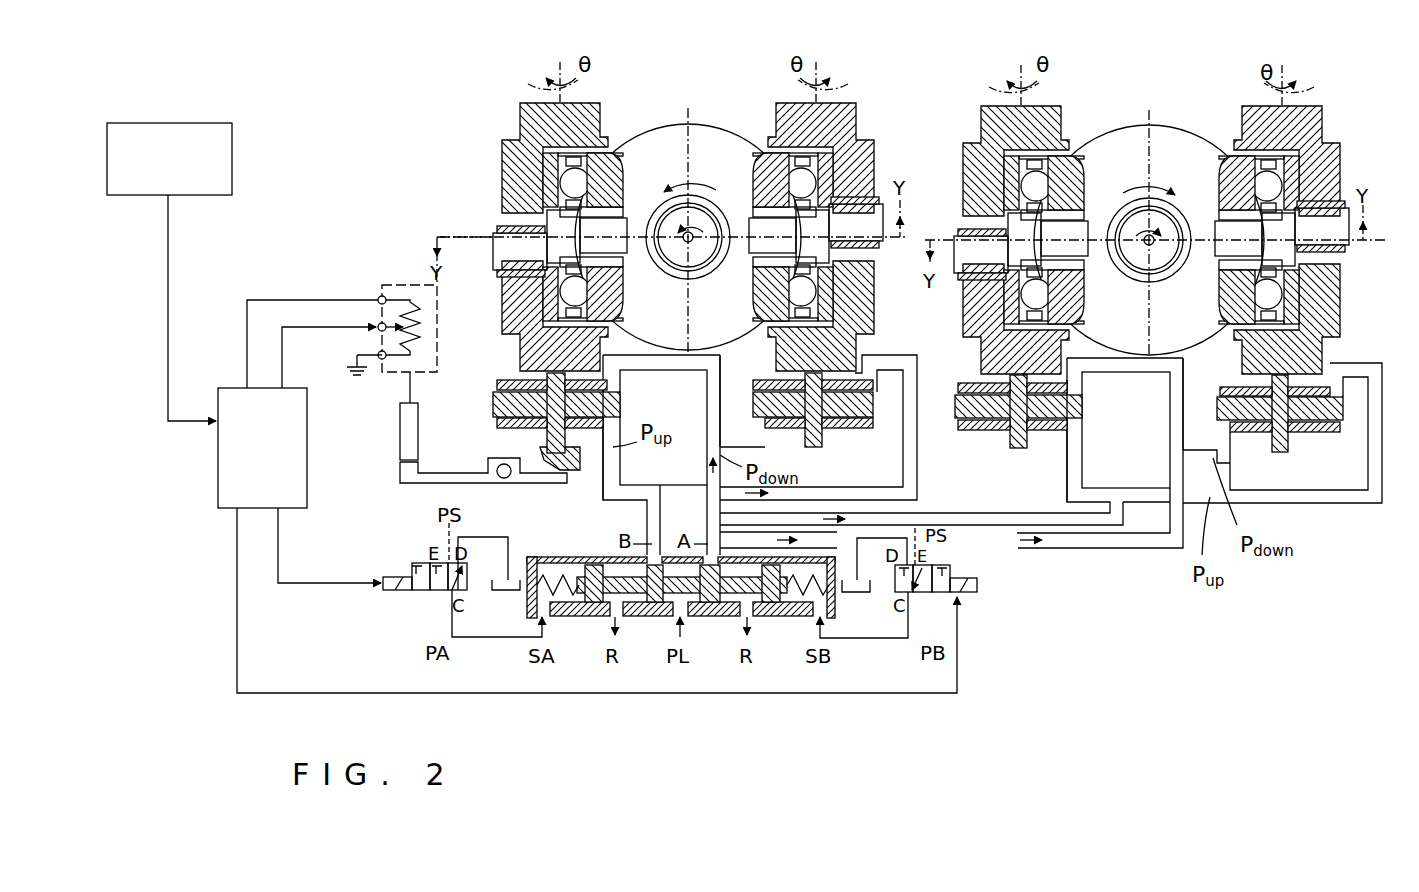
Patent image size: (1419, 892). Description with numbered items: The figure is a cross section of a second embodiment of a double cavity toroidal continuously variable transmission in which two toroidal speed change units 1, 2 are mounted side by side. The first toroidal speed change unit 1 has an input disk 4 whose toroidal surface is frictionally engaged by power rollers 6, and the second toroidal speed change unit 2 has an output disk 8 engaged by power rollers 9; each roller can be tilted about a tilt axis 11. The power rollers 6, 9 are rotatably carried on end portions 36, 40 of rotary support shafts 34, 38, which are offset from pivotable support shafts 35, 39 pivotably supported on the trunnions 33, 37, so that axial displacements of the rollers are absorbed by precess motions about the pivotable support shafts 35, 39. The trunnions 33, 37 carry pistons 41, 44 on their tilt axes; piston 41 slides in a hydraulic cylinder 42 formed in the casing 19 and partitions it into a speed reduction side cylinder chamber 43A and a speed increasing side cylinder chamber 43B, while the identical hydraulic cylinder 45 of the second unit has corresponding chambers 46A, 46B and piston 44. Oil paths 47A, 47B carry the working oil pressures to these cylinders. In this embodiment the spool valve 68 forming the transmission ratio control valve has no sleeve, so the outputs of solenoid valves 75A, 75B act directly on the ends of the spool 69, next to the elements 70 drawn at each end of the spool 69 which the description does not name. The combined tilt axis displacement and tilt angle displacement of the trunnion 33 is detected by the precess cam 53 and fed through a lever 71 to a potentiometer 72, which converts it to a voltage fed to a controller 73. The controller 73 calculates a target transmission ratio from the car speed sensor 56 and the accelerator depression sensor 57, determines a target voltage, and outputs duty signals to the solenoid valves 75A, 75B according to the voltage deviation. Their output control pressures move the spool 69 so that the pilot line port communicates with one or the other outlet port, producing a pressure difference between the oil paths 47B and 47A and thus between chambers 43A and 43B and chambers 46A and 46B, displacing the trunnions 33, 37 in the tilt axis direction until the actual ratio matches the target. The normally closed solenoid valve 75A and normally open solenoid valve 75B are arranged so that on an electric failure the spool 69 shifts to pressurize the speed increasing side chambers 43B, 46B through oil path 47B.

The toroidal speed change unit 1 is at (656, 112).
The toroidal speed change unit 2 is at (1128, 120).
The input disk 4 is at (703, 148).
The power rollers 6 is at (612, 153).
The output disk 8 is at (1168, 160).
The power rollers 9 is at (1074, 156).
The tilt axis 11 is at (919, 79).
The casing 19 is at (585, 430).
The trunnion 33 is at (530, 118).
The rotary support shaft 34 is at (557, 223).
The pivotable support shaft 35 is at (513, 250).
The end portion 36 is at (617, 230).
The trunnion 37 is at (993, 118).
The rotary support shaft 38 is at (1017, 225).
The pivotable support shaft 39 is at (970, 258).
The end portion 40 is at (1080, 230).
The piston 41 is at (493, 402).
The hydraulic cylinder 42 is at (488, 412).
The speed reduction side cylinder chamber 43A is at (530, 382).
The speed increasing side cylinder chamber 43B is at (520, 424).
The piston 44 is at (975, 408).
The hydraulic cylinder 45 is at (955, 425).
The speed reduction side cylinder chamber 46A is at (1002, 385).
The speed increasing side cylinder chamber 46B is at (986, 432).
The oil path 47A is at (707, 404).
The oil path 47B is at (613, 472).
The precess cam 53 is at (571, 476).
The car speed sensor 56 is at (169, 159).
The accelerator depression sensor 57 is at (169, 159).
The spool valve 68 is at (604, 555).
The spool 69 is at (690, 597).
The return spring 70 is at (562, 577).
The lever 71 is at (478, 480).
The potentiometer 72 is at (398, 283).
The controller 73 is at (292, 449).
The solenoid valve 75A is at (425, 582).
The solenoid valve 75B is at (950, 568).